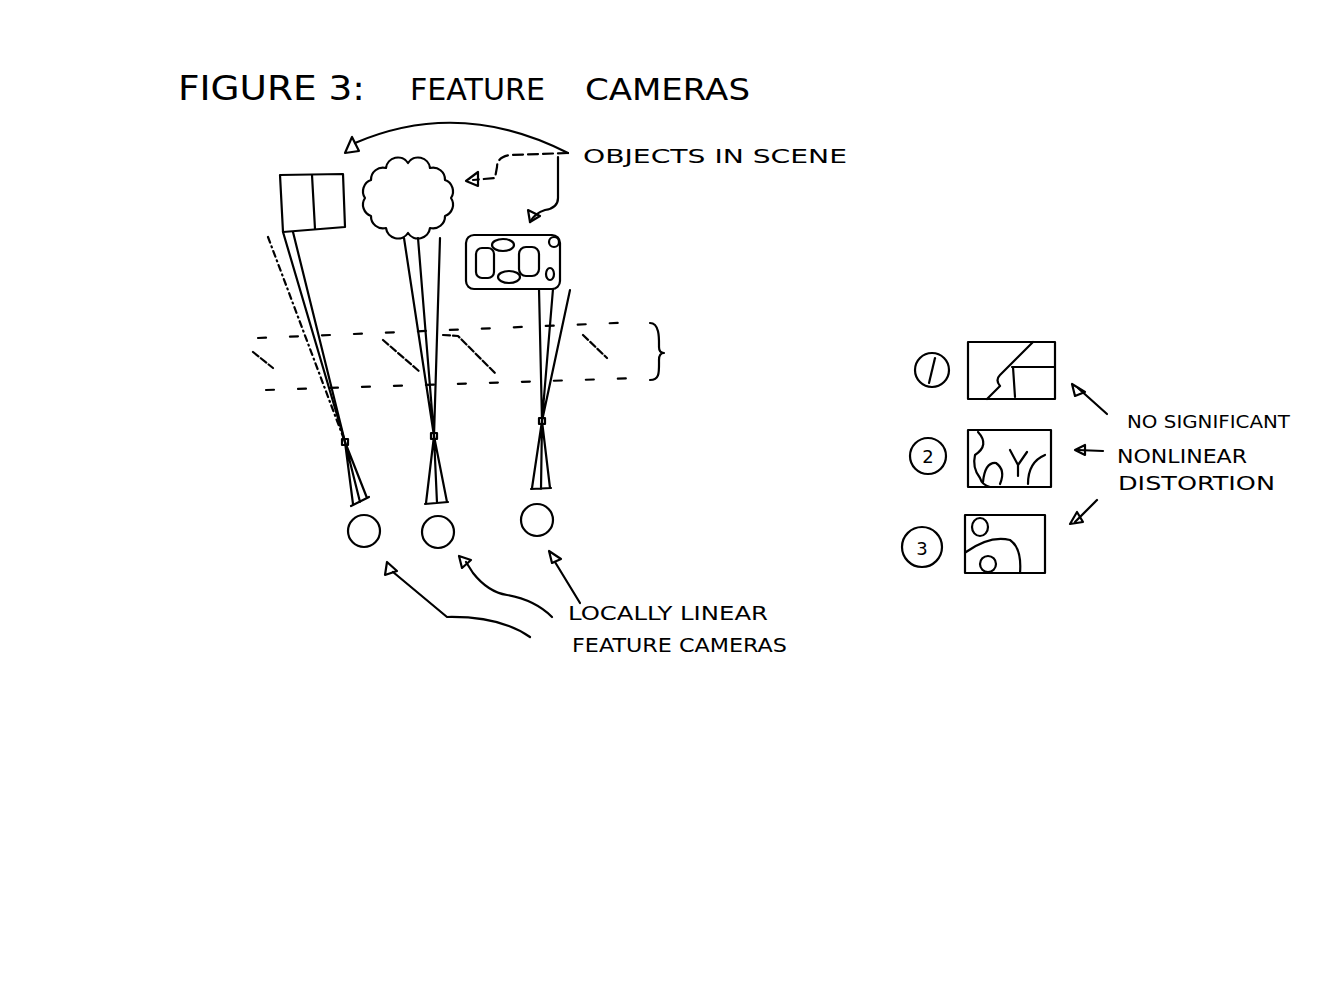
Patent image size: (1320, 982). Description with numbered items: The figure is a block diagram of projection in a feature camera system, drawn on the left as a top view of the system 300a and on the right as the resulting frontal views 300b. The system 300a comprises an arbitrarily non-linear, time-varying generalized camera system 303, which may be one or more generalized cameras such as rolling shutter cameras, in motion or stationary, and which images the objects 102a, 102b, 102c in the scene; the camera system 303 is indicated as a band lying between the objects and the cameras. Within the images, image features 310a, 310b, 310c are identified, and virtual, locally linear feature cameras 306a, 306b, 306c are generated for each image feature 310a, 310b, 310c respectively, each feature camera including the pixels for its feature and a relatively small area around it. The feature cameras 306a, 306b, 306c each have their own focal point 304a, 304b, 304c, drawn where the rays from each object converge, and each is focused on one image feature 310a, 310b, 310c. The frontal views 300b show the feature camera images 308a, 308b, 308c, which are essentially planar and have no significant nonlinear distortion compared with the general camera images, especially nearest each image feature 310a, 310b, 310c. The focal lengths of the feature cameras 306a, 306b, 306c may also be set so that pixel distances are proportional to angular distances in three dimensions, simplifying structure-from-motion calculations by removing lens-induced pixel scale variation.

The object 102a is at (280, 196).
The object 102b is at (443, 152).
The object 102c is at (560, 243).
The system 300a is at (193, 411).
The frontal views 300b is at (1072, 239).
The generalized camera system 303 is at (725, 462).
The focal point 304a is at (338, 448).
The focal point 304b is at (431, 436).
The focal point 304c is at (545, 421).
The feature camera 306a is at (362, 548).
The feature camera 306b is at (428, 545).
The feature camera 306c is at (516, 524).
The feature camera image 308a is at (1055, 355).
The feature camera image 308b is at (1051, 470).
The feature camera image 308c is at (1045, 555).
The image feature 310a is at (283, 231).
The image feature 310b is at (410, 240).
The image feature 310c is at (560, 285).